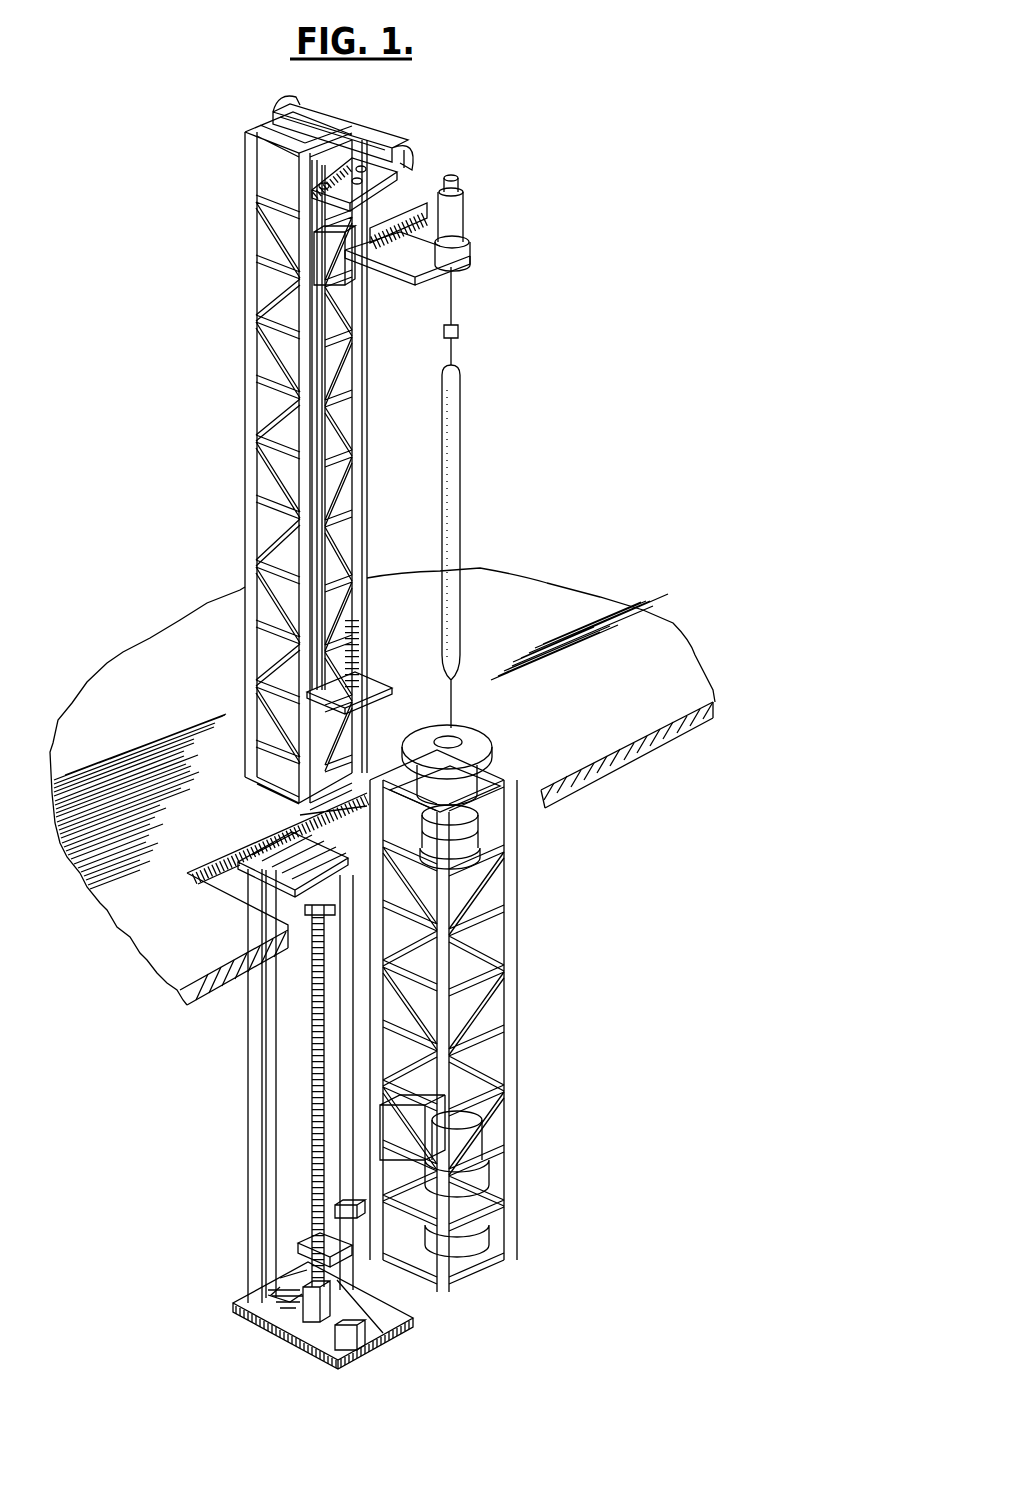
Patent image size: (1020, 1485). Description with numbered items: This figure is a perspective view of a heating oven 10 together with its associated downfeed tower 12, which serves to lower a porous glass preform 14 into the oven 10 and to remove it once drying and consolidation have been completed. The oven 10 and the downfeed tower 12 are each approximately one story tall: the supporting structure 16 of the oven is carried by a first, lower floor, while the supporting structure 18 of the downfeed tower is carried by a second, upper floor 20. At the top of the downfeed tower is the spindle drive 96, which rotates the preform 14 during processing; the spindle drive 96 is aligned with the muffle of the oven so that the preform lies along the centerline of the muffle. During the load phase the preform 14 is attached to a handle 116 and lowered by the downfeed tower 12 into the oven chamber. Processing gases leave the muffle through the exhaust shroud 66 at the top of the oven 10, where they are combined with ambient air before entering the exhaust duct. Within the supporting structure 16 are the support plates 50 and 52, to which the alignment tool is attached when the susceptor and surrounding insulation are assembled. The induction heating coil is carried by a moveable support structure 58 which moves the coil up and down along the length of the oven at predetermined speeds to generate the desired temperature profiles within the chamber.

The heating oven 10 is at (542, 1068).
The downfeed tower 12 is at (208, 453).
The porous glass preform 14 is at (461, 470).
The supporting structure 16 is at (516, 1213).
The supporting structure 18 is at (242, 150).
The upper floor 20 is at (636, 707).
The support plate 50 is at (487, 833).
The support plate 52 is at (483, 1130).
The moveable support structure 58 is at (375, 1280).
The exhaust shroud 66 is at (447, 778).
The spindle drive 96 is at (466, 214).
The handle 116 is at (460, 330).